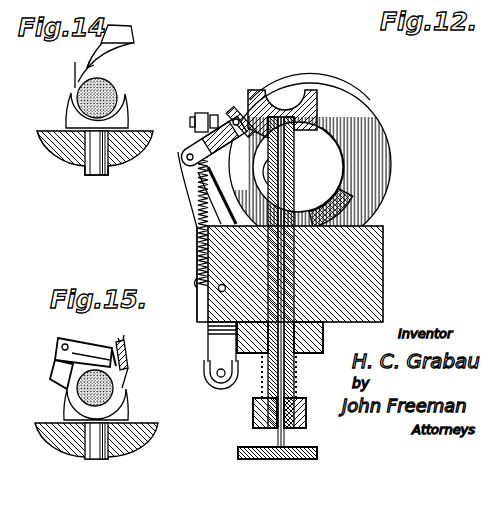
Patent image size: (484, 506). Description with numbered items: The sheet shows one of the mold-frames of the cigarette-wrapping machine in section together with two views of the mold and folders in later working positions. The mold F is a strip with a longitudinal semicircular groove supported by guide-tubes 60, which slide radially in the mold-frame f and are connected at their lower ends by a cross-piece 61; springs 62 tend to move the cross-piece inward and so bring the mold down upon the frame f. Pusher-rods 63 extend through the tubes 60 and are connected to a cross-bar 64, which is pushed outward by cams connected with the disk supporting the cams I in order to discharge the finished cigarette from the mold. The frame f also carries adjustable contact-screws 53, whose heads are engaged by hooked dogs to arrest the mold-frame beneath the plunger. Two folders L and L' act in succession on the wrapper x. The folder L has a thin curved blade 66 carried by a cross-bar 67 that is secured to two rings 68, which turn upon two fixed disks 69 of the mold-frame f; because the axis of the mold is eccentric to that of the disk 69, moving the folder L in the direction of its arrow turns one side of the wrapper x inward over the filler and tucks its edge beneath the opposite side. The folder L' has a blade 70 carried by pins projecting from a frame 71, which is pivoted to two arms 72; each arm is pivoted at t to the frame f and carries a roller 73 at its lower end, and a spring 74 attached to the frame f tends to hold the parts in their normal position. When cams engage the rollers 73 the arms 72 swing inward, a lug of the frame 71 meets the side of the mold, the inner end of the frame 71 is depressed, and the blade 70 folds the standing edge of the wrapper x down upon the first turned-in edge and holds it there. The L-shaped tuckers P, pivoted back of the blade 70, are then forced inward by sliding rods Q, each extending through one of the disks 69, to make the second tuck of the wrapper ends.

In FIG. 12, the rings 68 is at (387, 147).
In FIG. 12, the curved blade 66 is at (340, 163).
In FIG. 12, the fixed disks 69 is at (320, 136).
In FIG. 12, the cams I is at (298, 167).
In FIG. 12, the sliding rods Q is at (298, 177).
In FIG. 12, the cross-bar 67 is at (353, 207).
In FIG. 12, the mold-frame f is at (383, 271).
In FIG. 14, the mold-frame f is at (54, 131).
In FIG. 12, the mold F is at (293, 101).
In FIG. 15, the mold F is at (96, 414).
In FIG. 12, the pusher-rods 63 is at (272, 439).
In FIG. 12, the guide-tubes 60 is at (323, 338).
In FIG. 14, the guide-tubes 60 is at (104, 181).
In FIG. 12, the springs 62 is at (300, 377).
In FIG. 12, the cross-piece 61 is at (307, 408).
In FIG. 12, the cross-bar 64 is at (238, 453).
In FIG. 12, the arms 72 is at (183, 200).
In FIG. 12, the spring 74 is at (197, 203).
In FIG. 12, the roller 73 is at (223, 197).
In FIG. 15, the roller 73 is at (54, 374).
In FIG. 12, the frame 71 is at (217, 172).
In FIG. 15, the frame 71 is at (60, 347).
In FIG. 12, the blade 70 is at (228, 153).
In FIG. 15, the blade 70 is at (128, 372).
In FIG. 12, the contact-screws 53 is at (214, 113).
In FIG. 12, the folder L' is at (184, 107).
In FIG. 15, the folder L' is at (91, 340).
In FIG. 12, the tuckers P is at (230, 110).
In FIG. 15, the tuckers P is at (127, 343).
In FIG. 12, the pivot t is at (218, 290).
In FIG. 14, the folder L is at (115, 53).
In FIG. 14, the wrapper x is at (74, 79).
In FIG. 14, the holder cup F' is at (110, 110).